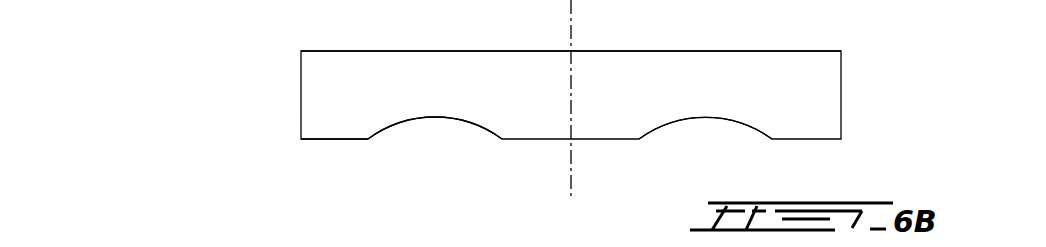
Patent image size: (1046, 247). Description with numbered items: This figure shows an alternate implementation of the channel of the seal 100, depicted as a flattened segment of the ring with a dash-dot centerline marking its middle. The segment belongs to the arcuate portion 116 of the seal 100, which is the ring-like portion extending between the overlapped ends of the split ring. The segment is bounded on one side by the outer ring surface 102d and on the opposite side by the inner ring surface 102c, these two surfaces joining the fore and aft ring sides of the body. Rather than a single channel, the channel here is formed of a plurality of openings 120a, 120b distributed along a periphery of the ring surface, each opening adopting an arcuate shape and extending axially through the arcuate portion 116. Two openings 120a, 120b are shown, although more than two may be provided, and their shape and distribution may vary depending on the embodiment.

The seal 100 is at (203, 100).
The inner ring surface 102c is at (342, 139).
The outer ring surface 102d is at (342, 51).
The arcuate portion 116 is at (373, 106).
The opening 120a is at (450, 117).
The opening 120b is at (717, 117).